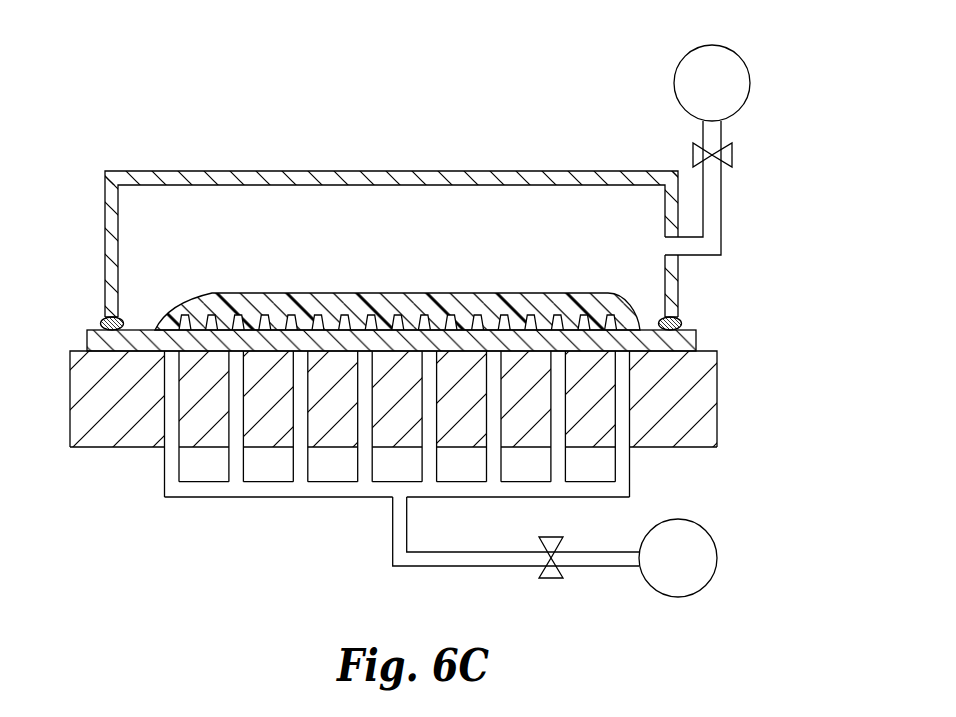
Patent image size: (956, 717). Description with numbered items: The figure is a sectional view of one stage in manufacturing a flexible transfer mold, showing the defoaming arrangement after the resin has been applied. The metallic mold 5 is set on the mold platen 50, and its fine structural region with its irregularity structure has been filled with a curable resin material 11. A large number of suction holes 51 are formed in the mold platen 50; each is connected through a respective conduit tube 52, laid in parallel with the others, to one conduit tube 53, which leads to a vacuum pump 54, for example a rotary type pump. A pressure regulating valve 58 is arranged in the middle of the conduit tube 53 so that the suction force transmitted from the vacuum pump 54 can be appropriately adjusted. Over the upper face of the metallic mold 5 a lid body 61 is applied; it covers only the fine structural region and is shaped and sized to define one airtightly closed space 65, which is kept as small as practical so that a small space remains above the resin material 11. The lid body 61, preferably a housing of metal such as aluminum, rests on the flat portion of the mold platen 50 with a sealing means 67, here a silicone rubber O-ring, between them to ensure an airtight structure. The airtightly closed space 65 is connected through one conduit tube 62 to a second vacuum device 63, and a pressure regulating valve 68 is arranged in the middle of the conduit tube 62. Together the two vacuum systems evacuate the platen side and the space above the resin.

The metallic mold 5 is at (697, 345).
The curable resin material 11 is at (562, 302).
The mold platen 50 is at (705, 403).
The suction holes 51 is at (238, 412).
The conduit tubes 52 is at (227, 468).
The conduit tube 53 is at (397, 533).
The vacuum pump 54 is at (652, 588).
The pressure regulating valve 58 is at (548, 579).
The lid body 61 is at (558, 174).
The conduit tube 62 is at (713, 192).
The vacuum device 63 is at (750, 62).
The airtightly closed space 65 is at (372, 245).
The sealing means 67 is at (103, 314).
The pressure regulating valve 68 is at (735, 153).